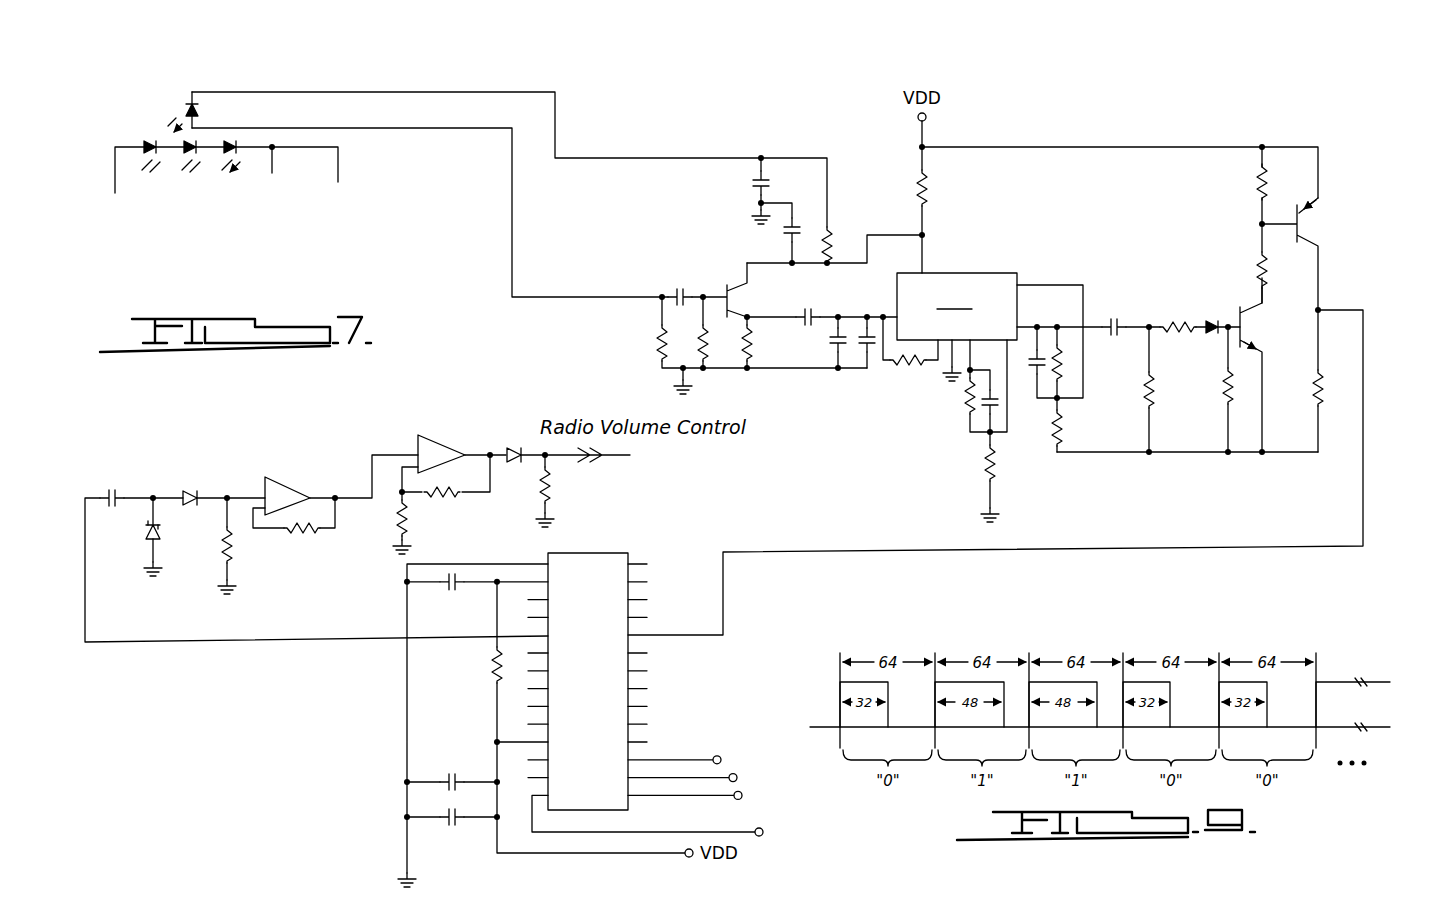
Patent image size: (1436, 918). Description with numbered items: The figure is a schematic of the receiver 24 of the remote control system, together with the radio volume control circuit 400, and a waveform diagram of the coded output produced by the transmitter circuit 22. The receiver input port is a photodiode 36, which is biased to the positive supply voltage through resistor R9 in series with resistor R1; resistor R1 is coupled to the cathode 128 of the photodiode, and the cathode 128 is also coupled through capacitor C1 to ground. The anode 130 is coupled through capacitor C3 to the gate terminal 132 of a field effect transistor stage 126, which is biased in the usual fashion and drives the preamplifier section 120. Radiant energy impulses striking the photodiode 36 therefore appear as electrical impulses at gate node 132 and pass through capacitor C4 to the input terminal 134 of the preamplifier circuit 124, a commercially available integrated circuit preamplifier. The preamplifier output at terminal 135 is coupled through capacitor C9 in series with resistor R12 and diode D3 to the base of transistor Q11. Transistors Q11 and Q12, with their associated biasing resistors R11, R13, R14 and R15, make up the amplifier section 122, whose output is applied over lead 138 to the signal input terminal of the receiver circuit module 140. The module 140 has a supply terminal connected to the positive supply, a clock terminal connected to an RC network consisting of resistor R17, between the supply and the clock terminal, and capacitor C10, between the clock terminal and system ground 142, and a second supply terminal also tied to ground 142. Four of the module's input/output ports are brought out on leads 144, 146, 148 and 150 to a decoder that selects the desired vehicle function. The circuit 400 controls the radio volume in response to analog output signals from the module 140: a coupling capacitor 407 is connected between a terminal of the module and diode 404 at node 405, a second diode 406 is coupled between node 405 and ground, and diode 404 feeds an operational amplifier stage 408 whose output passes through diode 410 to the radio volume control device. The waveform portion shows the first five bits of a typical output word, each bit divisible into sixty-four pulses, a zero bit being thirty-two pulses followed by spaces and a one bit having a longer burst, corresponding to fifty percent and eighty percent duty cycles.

The photodiode 36 is at (187, 108).
The cathode 128 is at (225, 92).
The anode 130 is at (270, 128).
The transmitter circuit 22 is at (168, 183).
The receiver 24 is at (790, 135).
The capacitor C1 is at (752, 183).
The field effect transistor stage 126 is at (783, 212).
The resistor R1 is at (830, 237).
The resistor R9 is at (930, 192).
The capacitor C3 is at (680, 285).
The gate terminal 132 is at (715, 285).
The capacitor C4 is at (808, 306).
The input terminal 134 is at (885, 312).
The preamplifier circuit 124 is at (957, 306).
The preamplifier section 120 is at (912, 393).
The output terminal 135 is at (1059, 368).
The capacitor C9 is at (1115, 318).
The resistor R12 is at (1175, 320).
The diode D3 is at (1212, 334).
The transistor Q11 is at (1250, 322).
The biasing resistor R11 is at (1225, 385).
The biasing resistor R13 is at (1318, 378).
The biasing resistor R14 is at (1256, 186).
The biasing resistor R15 is at (1258, 255).
The transistor Q12 is at (1306, 213).
The amplifier section 122 is at (1341, 242).
The lead 138 is at (1347, 310).
The circuit 400 is at (322, 460).
The capacitor 407 is at (113, 490).
The node 405 is at (153, 493).
The diode 404 is at (193, 490).
The second diode 406 is at (150, 540).
The operational amplifier stage 408 is at (327, 540).
The diode 410 is at (513, 445).
The receiver circuit module 140 is at (580, 553).
The capacitor C10 is at (450, 594).
The resistor R17 is at (487, 668).
The system ground 142 is at (405, 838).
The lead 144 is at (745, 832).
The lead 146 is at (735, 796).
The lead 148 is at (720, 775).
The lead 150 is at (693, 760).